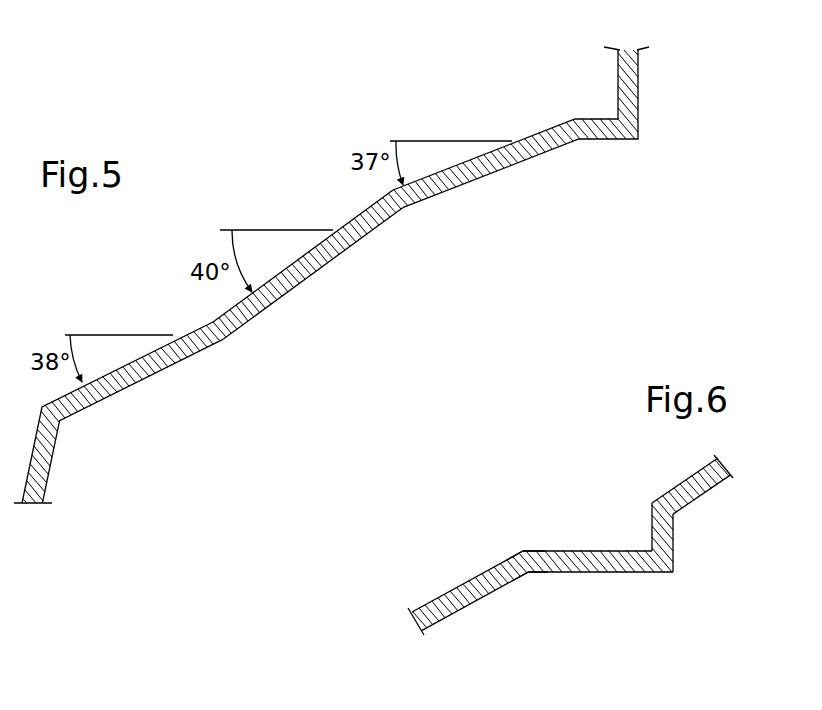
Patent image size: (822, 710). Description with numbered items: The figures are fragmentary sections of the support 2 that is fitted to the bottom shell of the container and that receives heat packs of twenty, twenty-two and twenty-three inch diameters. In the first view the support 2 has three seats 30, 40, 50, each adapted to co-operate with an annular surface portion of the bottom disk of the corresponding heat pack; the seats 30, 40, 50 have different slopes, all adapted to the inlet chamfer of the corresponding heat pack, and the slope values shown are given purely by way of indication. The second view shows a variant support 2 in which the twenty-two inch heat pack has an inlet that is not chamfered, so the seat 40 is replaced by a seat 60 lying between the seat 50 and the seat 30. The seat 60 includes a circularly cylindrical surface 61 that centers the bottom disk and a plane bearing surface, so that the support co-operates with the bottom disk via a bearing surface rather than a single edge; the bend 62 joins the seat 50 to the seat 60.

In FIG. 5, the support 2 is at (290, 212).
In FIG. 6, the support 2 is at (472, 568).
In FIG. 5, the seat 30 is at (510, 175).
In FIG. 6, the seat 30 is at (698, 503).
In FIG. 5, the seat 40 is at (337, 265).
In FIG. 5, the seat 50 is at (175, 368).
In FIG. 6, the seat 50 is at (478, 608).
In FIG. 6, the seat 60 is at (613, 575).
In FIG. 6, the circularly cylindrical surface 61 is at (648, 519).
In FIG. 6, the bend between lower wall and step 62 is at (538, 545).